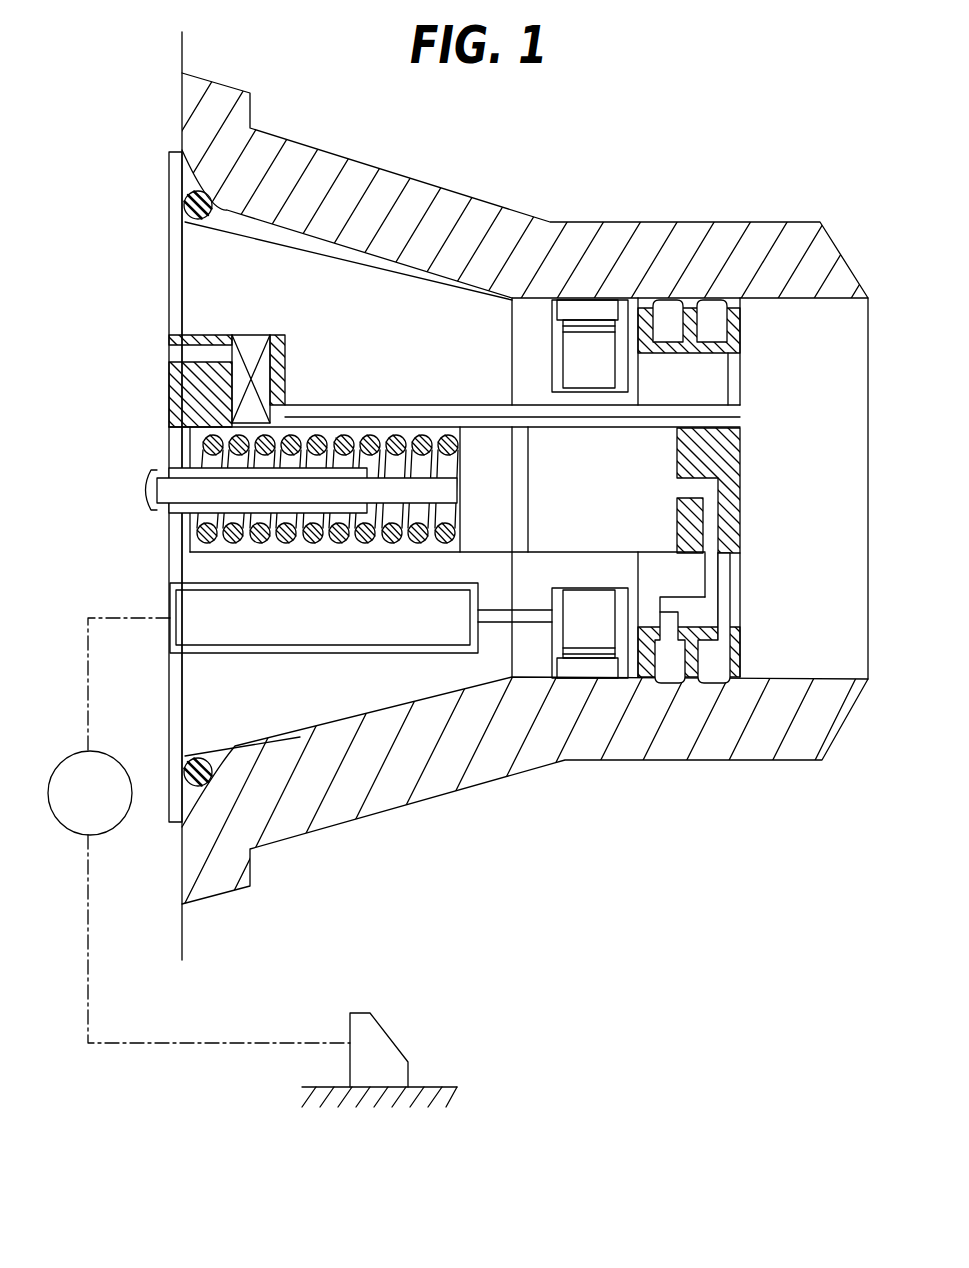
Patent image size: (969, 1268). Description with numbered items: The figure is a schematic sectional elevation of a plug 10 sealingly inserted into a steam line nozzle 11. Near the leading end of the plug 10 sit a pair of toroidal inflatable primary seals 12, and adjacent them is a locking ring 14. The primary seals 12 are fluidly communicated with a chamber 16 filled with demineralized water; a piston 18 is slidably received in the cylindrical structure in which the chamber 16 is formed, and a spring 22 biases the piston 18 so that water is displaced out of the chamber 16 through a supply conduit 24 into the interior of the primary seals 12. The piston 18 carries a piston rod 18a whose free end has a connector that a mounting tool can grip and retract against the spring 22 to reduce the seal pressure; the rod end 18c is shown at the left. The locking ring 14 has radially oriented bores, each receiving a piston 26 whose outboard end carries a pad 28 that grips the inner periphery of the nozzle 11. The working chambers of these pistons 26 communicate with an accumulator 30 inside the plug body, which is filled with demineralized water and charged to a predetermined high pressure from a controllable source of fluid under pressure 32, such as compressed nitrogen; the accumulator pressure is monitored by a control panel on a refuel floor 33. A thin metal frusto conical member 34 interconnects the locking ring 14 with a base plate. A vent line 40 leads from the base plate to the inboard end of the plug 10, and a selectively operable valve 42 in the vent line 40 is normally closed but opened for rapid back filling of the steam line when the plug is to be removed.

The plug 10 is at (140, 276).
The steam line nozzle 11 is at (475, 795).
The inflatable primary seals 12 is at (683, 328).
The locking ring 14 is at (650, 577).
The chamber 16 is at (660, 517).
The piston 18 is at (490, 442).
The piston rod 18a is at (198, 490).
The rod end cap 18c is at (155, 478).
The spring 22 is at (193, 532).
The supply conduit 24 is at (710, 558).
The piston 26 is at (588, 325).
The pad 28 is at (595, 307).
The accumulator 30 is at (332, 615).
The controllable source of fluid under pressure 32 is at (107, 805).
The refuel floor 33 is at (443, 1092).
The frusto conical member 34 is at (243, 743).
The vent line 40 is at (362, 405).
The selectively operable valve 42 is at (253, 335).